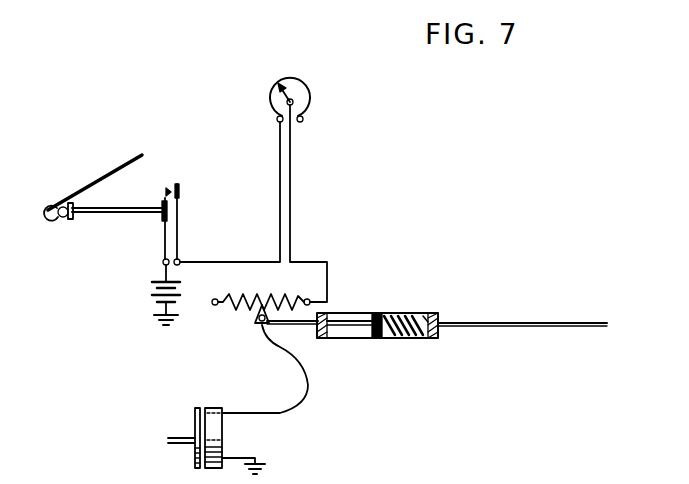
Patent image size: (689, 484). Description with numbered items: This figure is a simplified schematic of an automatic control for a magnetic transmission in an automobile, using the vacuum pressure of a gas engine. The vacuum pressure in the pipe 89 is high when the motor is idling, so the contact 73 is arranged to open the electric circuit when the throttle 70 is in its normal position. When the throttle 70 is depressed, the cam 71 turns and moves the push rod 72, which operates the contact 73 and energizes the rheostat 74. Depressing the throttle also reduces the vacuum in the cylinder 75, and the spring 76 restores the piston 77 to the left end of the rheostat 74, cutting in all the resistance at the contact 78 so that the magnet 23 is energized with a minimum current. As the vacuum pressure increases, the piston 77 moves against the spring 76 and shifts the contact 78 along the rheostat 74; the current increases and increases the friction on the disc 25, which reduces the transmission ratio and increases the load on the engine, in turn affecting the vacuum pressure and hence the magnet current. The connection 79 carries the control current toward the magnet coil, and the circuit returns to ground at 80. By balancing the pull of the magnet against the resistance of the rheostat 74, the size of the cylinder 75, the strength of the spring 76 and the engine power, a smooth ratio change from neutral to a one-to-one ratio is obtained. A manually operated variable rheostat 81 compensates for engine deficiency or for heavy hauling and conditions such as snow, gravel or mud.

The throttle 70 is at (84, 190).
The cam 71 is at (60, 218).
The push rod 72 is at (117, 199).
The contact 73 is at (180, 203).
The rheostat 74 is at (273, 301).
The cylinder 75 is at (390, 303).
The spring 76 is at (399, 338).
The piston 77 is at (371, 332).
The contact 78 is at (256, 327).
The conductor 79 is at (256, 413).
The ground connection 80 is at (255, 460).
The variable rheostat 81 is at (310, 104).
The pipe 89 is at (598, 320).
The disc 25 is at (196, 410).
The magnet 23 is at (216, 470).